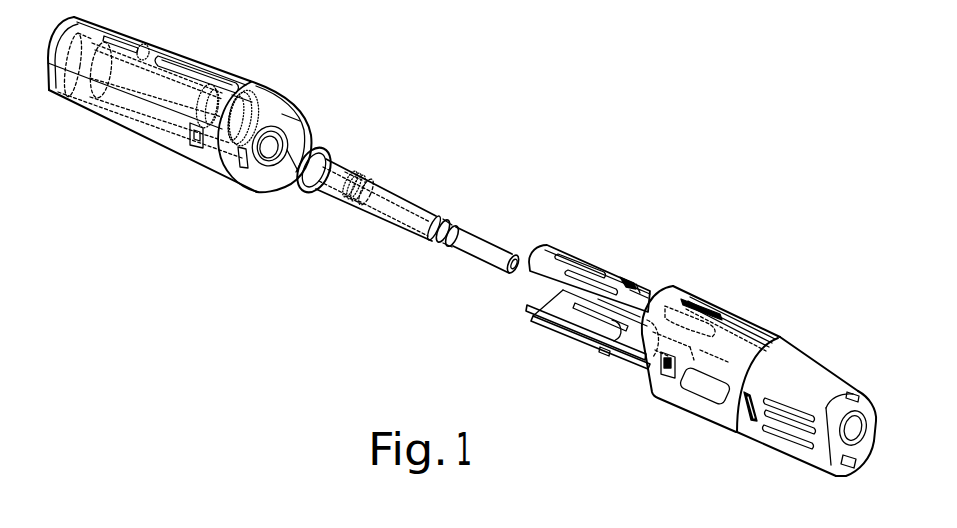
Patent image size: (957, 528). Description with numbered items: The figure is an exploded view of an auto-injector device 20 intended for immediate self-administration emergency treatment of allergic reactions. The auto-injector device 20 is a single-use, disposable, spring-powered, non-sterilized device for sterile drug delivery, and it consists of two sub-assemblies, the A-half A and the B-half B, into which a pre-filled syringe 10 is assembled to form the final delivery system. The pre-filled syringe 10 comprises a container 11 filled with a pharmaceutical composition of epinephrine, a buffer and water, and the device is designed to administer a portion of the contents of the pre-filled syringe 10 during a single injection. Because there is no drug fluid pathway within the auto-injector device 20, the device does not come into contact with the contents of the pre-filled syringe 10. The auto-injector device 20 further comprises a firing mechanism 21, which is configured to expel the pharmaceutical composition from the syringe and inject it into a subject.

The A-half sub-assembly A is at (158, 147).
The B-half sub-assembly B is at (563, 342).
The pre-filled syringe 10 is at (444, 141).
The container 11 is at (436, 212).
The auto-injector device 20 is at (566, 84).
The firing mechanism 21 is at (283, 112).